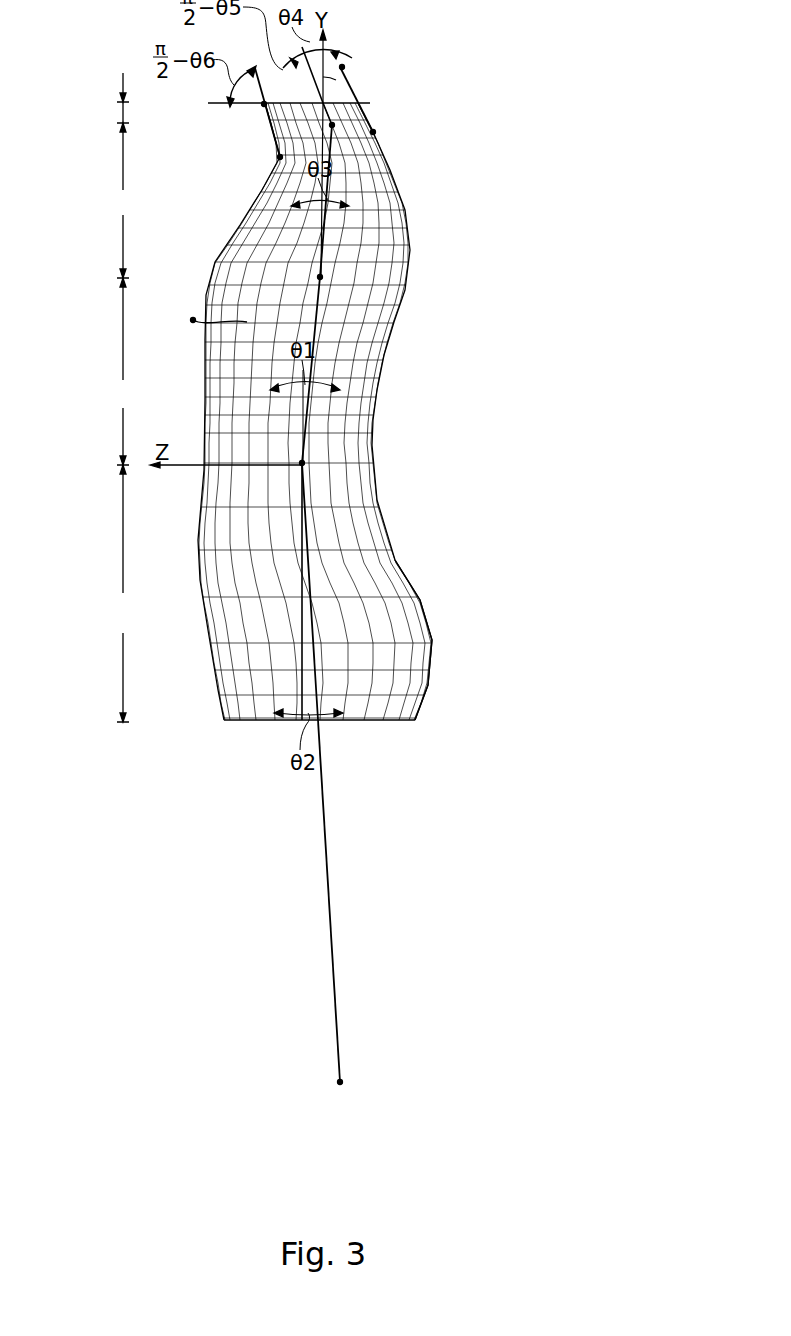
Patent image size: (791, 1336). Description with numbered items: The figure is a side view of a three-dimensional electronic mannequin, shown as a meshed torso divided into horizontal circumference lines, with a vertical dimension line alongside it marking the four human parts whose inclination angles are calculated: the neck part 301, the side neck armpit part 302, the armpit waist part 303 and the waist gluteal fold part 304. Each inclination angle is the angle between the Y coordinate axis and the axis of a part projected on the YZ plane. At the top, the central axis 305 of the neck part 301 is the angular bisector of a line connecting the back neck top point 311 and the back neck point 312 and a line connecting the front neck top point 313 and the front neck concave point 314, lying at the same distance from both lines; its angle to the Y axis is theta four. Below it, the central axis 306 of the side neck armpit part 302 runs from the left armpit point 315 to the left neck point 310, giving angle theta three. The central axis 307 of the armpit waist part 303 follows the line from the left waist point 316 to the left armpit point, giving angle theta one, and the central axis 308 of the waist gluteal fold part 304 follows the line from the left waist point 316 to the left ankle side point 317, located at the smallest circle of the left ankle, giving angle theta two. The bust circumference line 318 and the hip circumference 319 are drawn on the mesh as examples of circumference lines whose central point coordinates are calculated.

The neck part 301 is at (123, 113).
The side neck armpit part 302 is at (127, 200).
The armpit waist part 303 is at (125, 371).
The waist gluteal fold part 304 is at (125, 593).
The central axis of the neck part 305 is at (370, 116).
The central axis of the side neck armpit part 306 is at (327, 215).
The central axis of the armpit waist part 307 is at (313, 327).
The central axis of the waist gluteal fold part 308 is at (310, 575).
The left neck point 310 is at (375, 128).
The back neck top point 311 is at (345, 67).
The back neck point 312 is at (375, 132).
The front neck top point 313 is at (263, 105).
The front neck concave point 314 is at (280, 157).
The left armpit point 315 is at (320, 277).
The left waist point 316 is at (302, 463).
The left ankle side point 317 is at (340, 1082).
The bust circumference line 318 is at (193, 320).
The hip circumference 319 is at (357, 643).